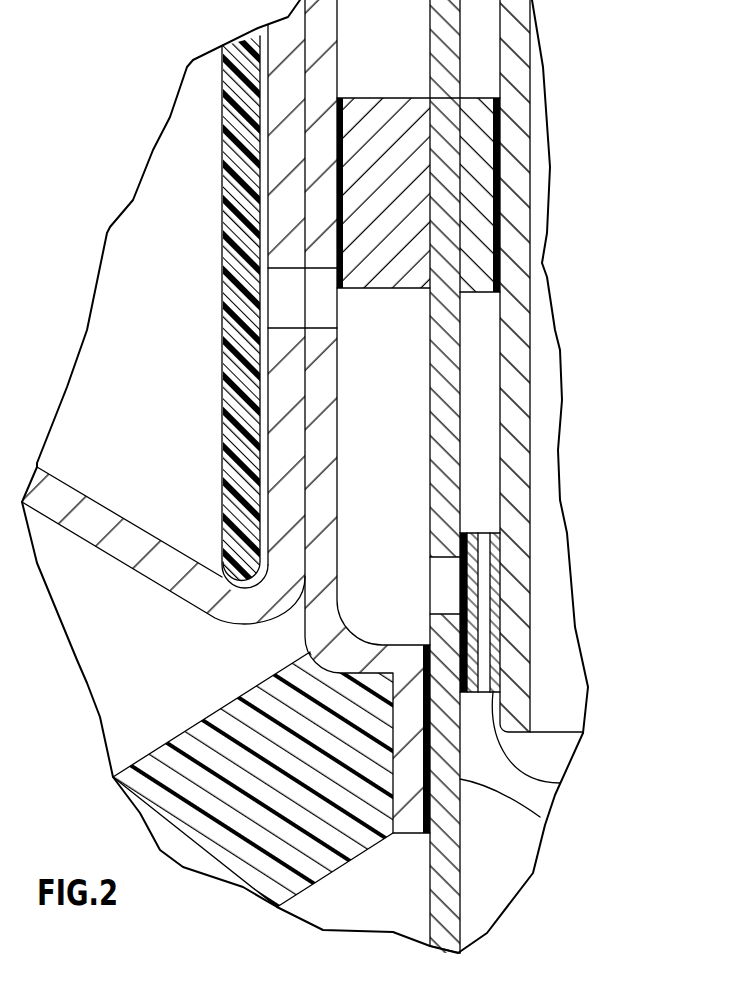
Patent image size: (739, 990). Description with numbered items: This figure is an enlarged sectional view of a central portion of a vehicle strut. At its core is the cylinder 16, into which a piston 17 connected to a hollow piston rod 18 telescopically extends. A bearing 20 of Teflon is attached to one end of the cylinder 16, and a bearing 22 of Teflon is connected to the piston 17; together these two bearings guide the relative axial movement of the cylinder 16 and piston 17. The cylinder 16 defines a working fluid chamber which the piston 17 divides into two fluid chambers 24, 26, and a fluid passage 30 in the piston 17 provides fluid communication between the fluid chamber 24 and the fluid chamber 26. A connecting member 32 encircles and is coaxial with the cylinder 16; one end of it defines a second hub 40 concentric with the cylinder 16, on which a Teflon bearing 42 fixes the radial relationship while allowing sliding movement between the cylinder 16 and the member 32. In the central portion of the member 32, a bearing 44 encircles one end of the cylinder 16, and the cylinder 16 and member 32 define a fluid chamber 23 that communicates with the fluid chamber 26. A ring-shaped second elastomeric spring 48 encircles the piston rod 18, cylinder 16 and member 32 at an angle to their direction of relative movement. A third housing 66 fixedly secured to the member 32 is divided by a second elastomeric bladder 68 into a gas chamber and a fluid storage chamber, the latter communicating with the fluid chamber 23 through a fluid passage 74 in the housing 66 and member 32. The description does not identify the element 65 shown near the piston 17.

The cylinder 16 is at (447, 903).
The piston 17 is at (560, 783).
The hollow piston rod 18 is at (515, 422).
The bearing 20 is at (500, 170).
The bearing 22 is at (467, 582).
The fluid chamber 23 is at (377, 443).
The fluid chamber 24 is at (503, 857).
The fluid chamber 26 is at (483, 355).
The fluid passage 30 is at (483, 637).
The connecting member 32 is at (297, 618).
The second hub 40 is at (427, 750).
The bearing 42 is at (430, 773).
The bearing 44 is at (337, 203).
The second elastomeric spring 48 is at (267, 823).
The rod groove 65 is at (440, 585).
The third housing 66 is at (80, 538).
The second elastomeric bladder 68 is at (227, 152).
The fluid passage 74 is at (288, 299).